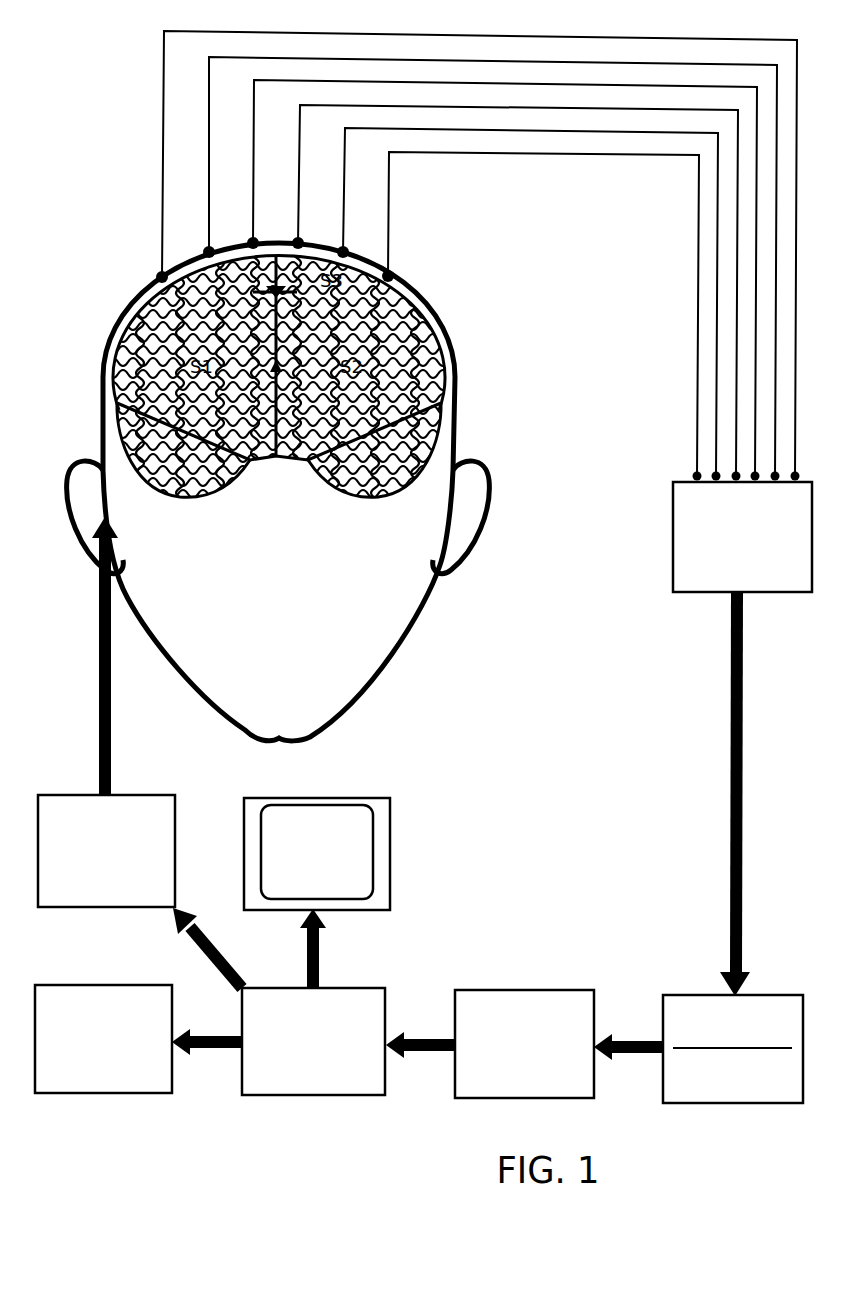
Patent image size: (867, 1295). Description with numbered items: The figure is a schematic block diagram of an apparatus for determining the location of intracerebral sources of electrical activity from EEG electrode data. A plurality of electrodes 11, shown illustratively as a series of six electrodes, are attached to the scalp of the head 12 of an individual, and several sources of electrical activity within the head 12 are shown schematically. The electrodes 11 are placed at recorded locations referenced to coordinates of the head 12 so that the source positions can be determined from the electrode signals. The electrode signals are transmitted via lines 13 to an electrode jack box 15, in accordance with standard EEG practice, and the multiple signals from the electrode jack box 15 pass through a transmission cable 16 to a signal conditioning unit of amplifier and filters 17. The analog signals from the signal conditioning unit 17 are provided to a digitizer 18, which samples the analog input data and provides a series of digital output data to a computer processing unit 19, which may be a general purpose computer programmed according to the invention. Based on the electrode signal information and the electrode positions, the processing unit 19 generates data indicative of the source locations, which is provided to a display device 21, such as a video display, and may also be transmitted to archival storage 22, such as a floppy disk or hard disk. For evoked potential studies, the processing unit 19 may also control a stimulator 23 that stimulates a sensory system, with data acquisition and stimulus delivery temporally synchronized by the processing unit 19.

The electrodes 11 is at (160, 275).
The head 12 is at (112, 357).
The lines 13 is at (794, 265).
The electrode jack box 15 is at (673, 546).
The transmission cable 16 is at (727, 845).
The signal conditioning unit of amplifier and filters 17 is at (695, 995).
The digitizer 18 is at (553, 990).
The computer processing unit 19 is at (368, 988).
The display device 21 is at (368, 798).
The archival storage 22 is at (112, 985).
The stimulator 23 is at (143, 795).